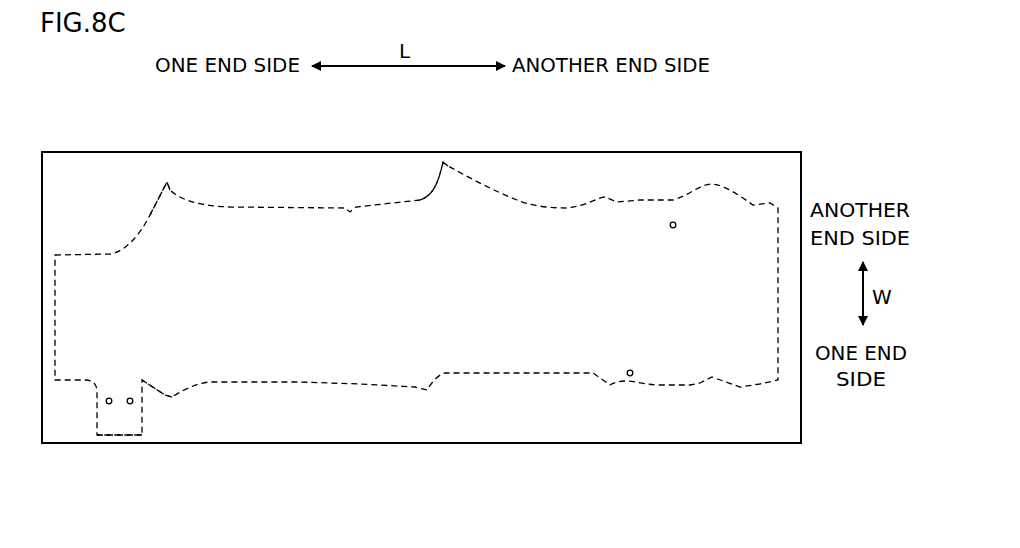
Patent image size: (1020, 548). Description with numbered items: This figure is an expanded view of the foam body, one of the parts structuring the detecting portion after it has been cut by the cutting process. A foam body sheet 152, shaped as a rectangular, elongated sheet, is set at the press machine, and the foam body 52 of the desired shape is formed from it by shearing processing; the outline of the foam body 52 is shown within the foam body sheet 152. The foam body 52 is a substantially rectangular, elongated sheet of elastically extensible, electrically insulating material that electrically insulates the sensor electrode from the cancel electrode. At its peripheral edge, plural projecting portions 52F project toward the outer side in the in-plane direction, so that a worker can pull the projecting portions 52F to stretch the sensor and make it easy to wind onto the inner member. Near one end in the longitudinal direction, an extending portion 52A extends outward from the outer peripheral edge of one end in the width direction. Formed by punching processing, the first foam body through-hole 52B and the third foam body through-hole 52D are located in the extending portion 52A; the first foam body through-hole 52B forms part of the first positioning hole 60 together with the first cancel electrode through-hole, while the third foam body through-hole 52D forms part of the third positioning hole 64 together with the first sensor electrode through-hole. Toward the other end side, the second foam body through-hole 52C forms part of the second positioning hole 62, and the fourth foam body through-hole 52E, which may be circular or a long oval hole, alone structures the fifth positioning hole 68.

The foam body sheet 152 is at (704, 150).
The foam body 52 is at (750, 205).
The extending portion 52A is at (118, 428).
The first foam body through-hole 52B is at (223, 459).
The first positioning hole 60 is at (133, 403).
The second foam body through-hole 52C is at (645, 158).
The second positioning hole 62 is at (673, 221).
The third foam body through-hole 52D is at (88, 462).
The third positioning hole 64 is at (106, 402).
The fourth foam body through-hole 52E is at (642, 446).
The fifth positioning hole 68 is at (629, 377).
The projecting portions 52F is at (180, 183).